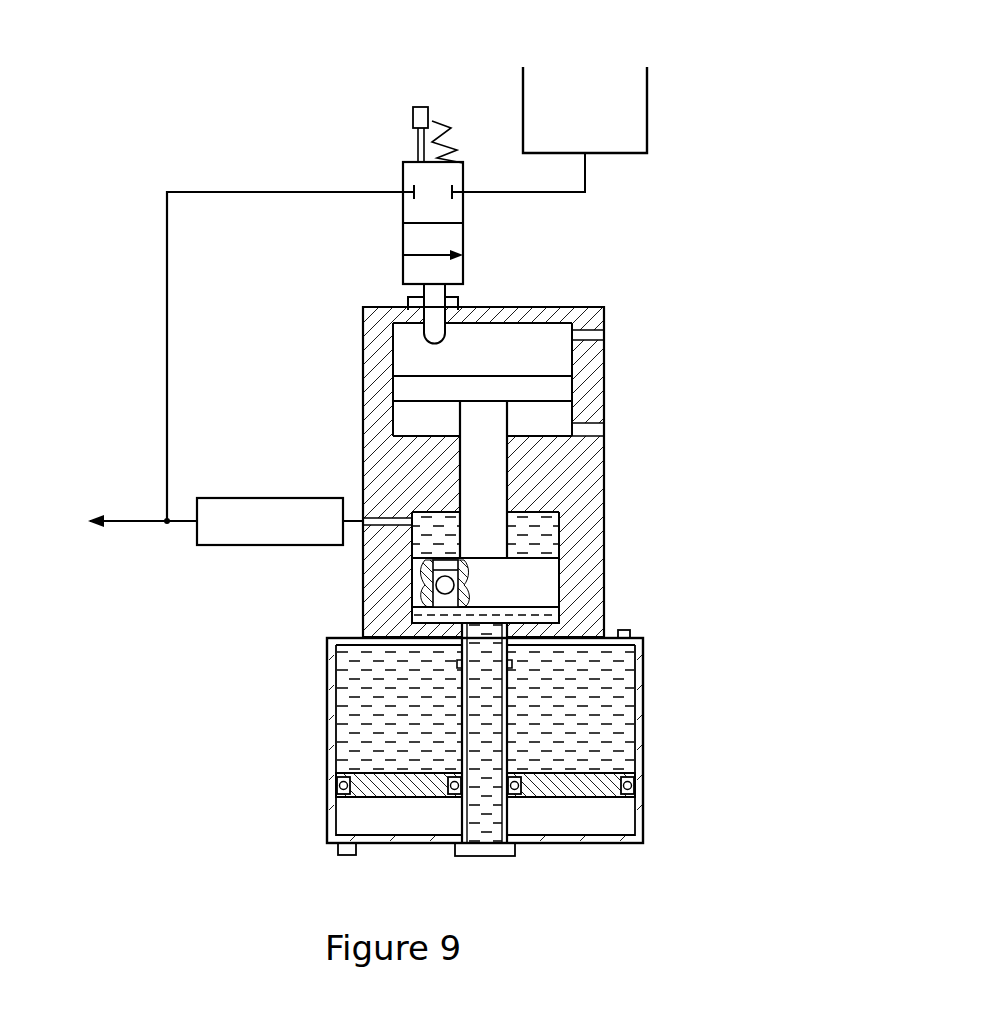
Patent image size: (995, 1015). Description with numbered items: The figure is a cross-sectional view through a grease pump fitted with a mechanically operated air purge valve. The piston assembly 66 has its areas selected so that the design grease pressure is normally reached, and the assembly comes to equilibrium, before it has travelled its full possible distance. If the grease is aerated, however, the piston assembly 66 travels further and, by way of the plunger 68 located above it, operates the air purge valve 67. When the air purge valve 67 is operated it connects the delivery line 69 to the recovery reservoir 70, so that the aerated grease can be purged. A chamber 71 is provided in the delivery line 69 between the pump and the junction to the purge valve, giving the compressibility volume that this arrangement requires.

The piston assembly 66 is at (495, 507).
The air purge valve 67 is at (411, 168).
The plunger 68 is at (457, 296).
The delivery line 69 is at (168, 347).
The recovery reservoir 70 is at (622, 155).
The chamber 71 is at (253, 535).